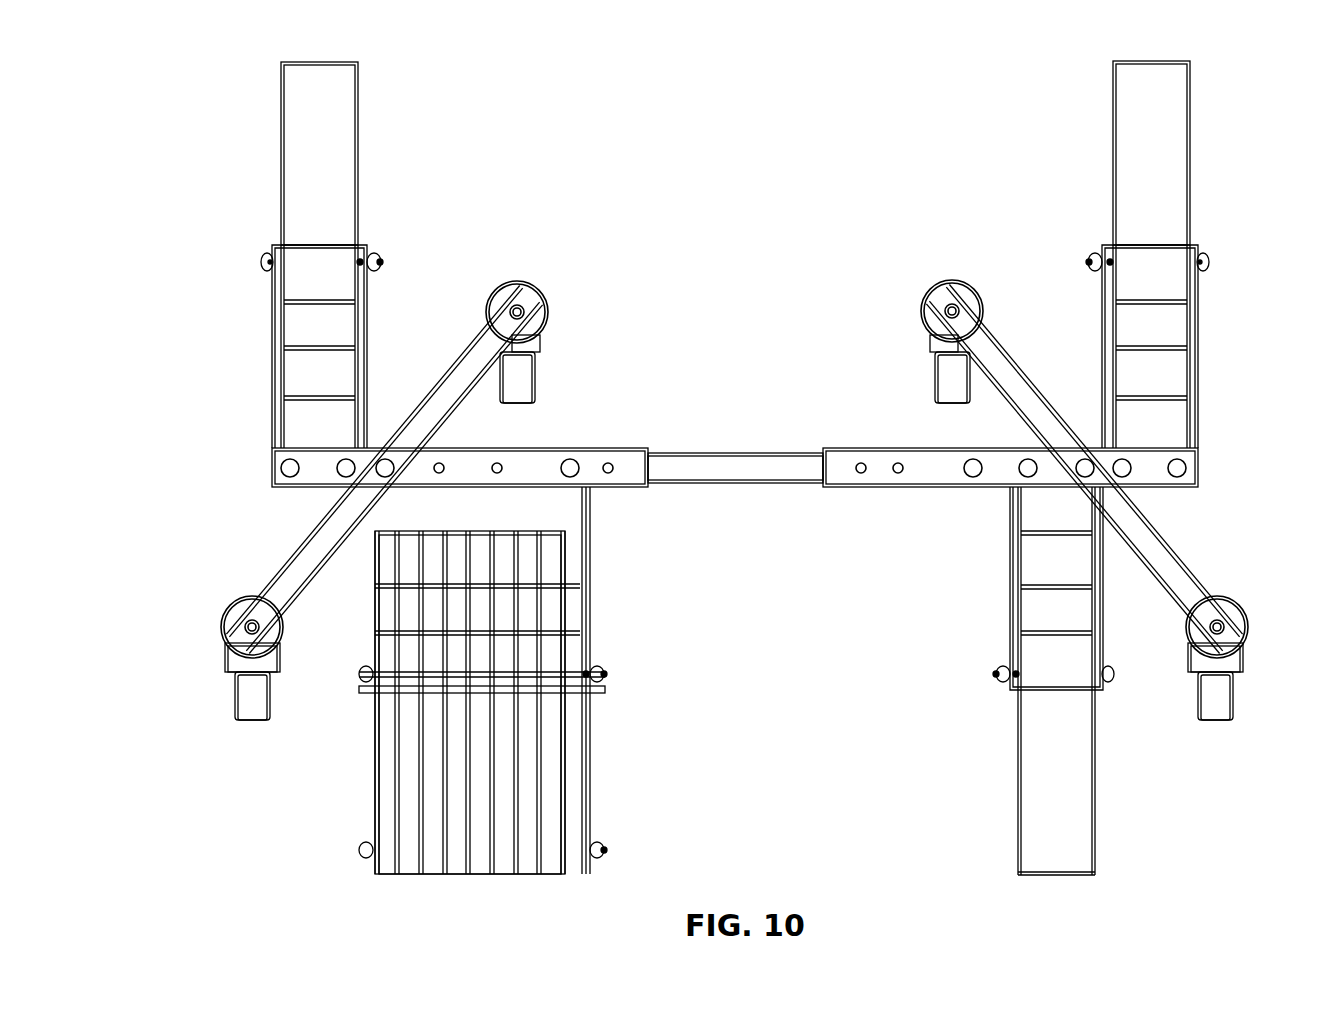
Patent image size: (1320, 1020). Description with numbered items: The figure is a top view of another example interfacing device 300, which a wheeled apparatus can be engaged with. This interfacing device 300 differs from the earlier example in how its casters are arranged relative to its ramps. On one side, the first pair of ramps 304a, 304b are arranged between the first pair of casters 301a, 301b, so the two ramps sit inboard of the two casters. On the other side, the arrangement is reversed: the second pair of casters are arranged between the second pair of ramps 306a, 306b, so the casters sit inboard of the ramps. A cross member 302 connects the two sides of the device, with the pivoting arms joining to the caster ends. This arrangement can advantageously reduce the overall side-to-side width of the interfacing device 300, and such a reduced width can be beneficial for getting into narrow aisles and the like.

The interfacing device 300 is at (226, 66).
The first caster of the first pair of casters 301a is at (1213, 722).
The second caster of the first pair of casters 301b is at (250, 722).
The frame bar and pivoting arms 302 is at (476, 335).
The first ramp of the first pair of ramps 304a is at (1020, 808).
The second ramp of the first pair of ramps 304b is at (549, 873).
The first ramp of the second pair of ramps 306a is at (1113, 137).
The second ramp of the second pair of ramps 306b is at (358, 150).